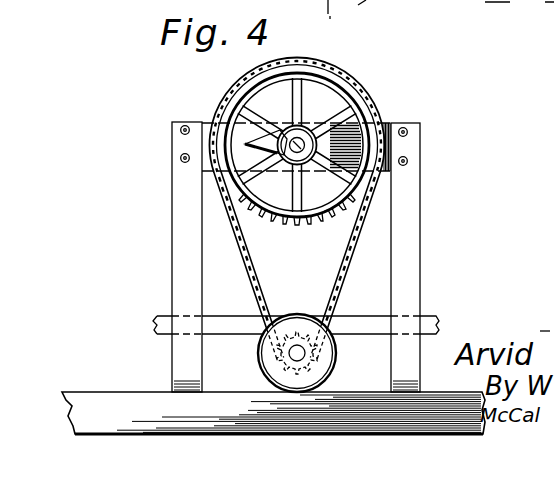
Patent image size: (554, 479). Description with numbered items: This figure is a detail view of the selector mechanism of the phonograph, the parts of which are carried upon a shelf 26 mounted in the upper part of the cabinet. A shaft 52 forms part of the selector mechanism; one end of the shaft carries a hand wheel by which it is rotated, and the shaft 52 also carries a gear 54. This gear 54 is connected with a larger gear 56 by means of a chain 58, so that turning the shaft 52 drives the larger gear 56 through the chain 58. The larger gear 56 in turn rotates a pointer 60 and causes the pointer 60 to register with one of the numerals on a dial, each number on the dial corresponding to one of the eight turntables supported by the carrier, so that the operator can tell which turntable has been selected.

The shelf 26 is at (97, 399).
The shaft 52 is at (292, 355).
The gear 54 is at (297, 330).
The larger gear 56 is at (372, 107).
The chain 58 is at (362, 230).
The pointer 60 is at (245, 145).